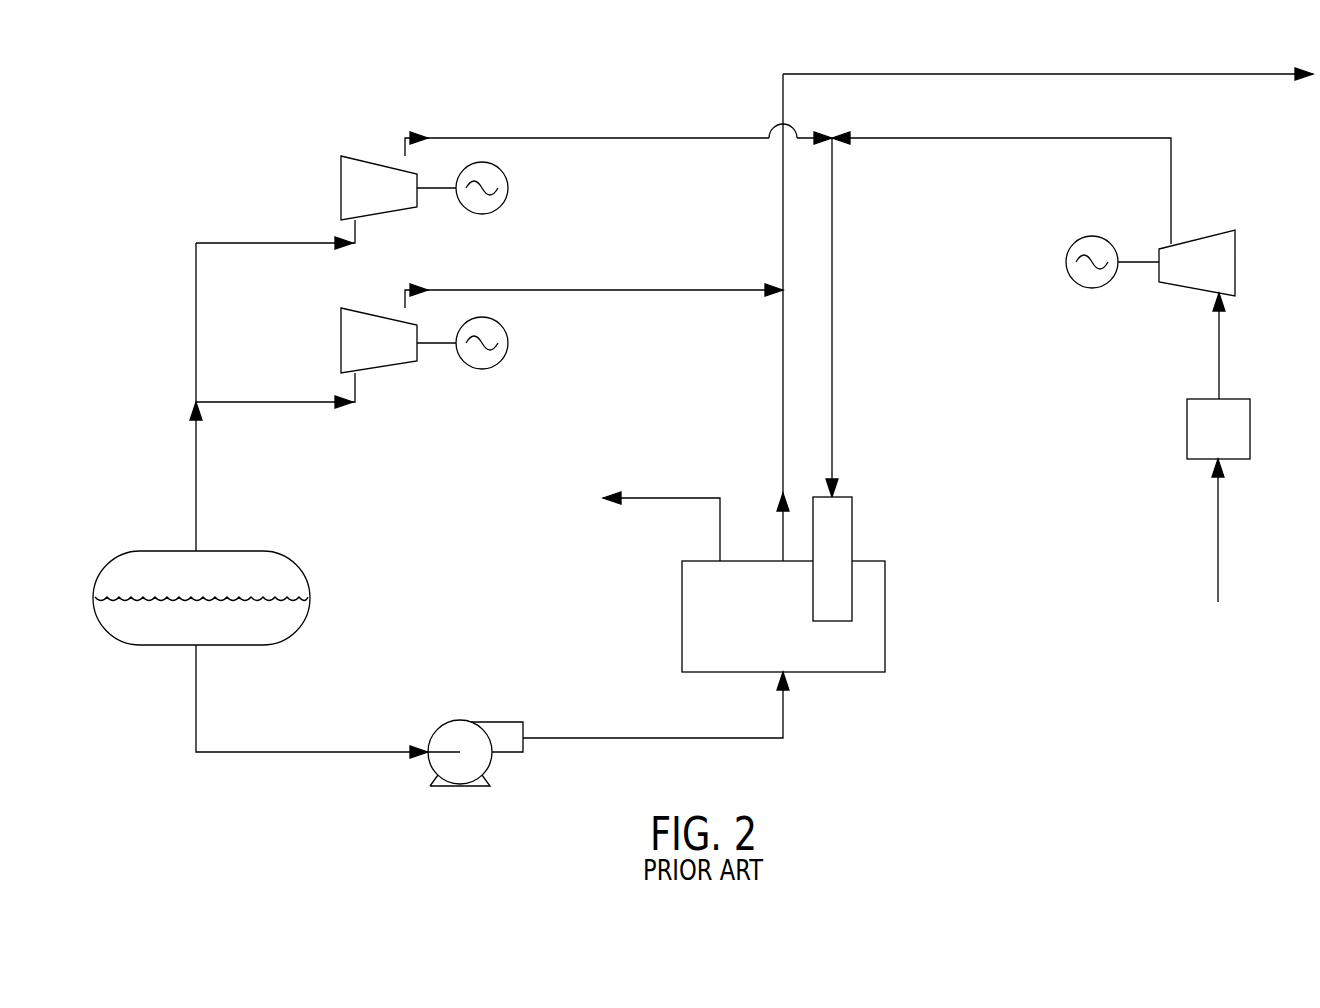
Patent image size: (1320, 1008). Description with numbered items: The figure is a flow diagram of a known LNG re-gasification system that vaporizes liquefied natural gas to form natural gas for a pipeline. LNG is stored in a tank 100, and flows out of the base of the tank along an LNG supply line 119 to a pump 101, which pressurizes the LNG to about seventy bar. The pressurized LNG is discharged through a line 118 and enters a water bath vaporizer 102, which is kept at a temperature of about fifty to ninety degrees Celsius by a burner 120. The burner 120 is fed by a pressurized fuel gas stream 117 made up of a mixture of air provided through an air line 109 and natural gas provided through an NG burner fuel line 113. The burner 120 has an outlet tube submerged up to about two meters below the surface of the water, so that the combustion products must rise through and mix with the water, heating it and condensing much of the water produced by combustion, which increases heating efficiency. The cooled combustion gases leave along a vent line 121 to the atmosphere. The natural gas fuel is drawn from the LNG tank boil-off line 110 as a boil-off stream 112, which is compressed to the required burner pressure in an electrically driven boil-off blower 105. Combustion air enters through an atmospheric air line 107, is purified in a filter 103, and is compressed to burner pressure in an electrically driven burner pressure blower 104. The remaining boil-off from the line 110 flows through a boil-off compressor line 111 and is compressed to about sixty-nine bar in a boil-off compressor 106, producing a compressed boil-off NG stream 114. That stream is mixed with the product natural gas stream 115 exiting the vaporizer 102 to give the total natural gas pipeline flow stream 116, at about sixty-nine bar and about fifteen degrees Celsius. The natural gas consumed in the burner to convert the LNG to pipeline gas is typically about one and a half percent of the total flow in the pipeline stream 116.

The tank 100 is at (217, 587).
The pump 101 is at (475, 720).
The water bath vaporizer 102 is at (797, 630).
The filter 103 is at (1233, 443).
The burner pressure blower 104 is at (1217, 277).
The boil-off blower 105 is at (387, 200).
The boil-off compressor 106 is at (387, 353).
The atmospheric air line 107 is at (1218, 553).
The air line 109 is at (935, 138).
The LNG tank boil-off line 110 is at (196, 485).
The boil-off compressor line 111 is at (294, 402).
The boil-off stream 112 is at (238, 243).
The NG burner fuel line 113 is at (606, 138).
The compressed boil-off NG stream 114 is at (558, 290).
The product natural gas stream 115 is at (783, 423).
The total natural gas pipeline flow stream 116 is at (1182, 74).
The pressurized fuel gas stream 117 is at (832, 367).
The line 118 is at (597, 737).
The LNG supply line 119 is at (196, 718).
The burner 120 is at (845, 571).
The vent line 121 is at (640, 498).